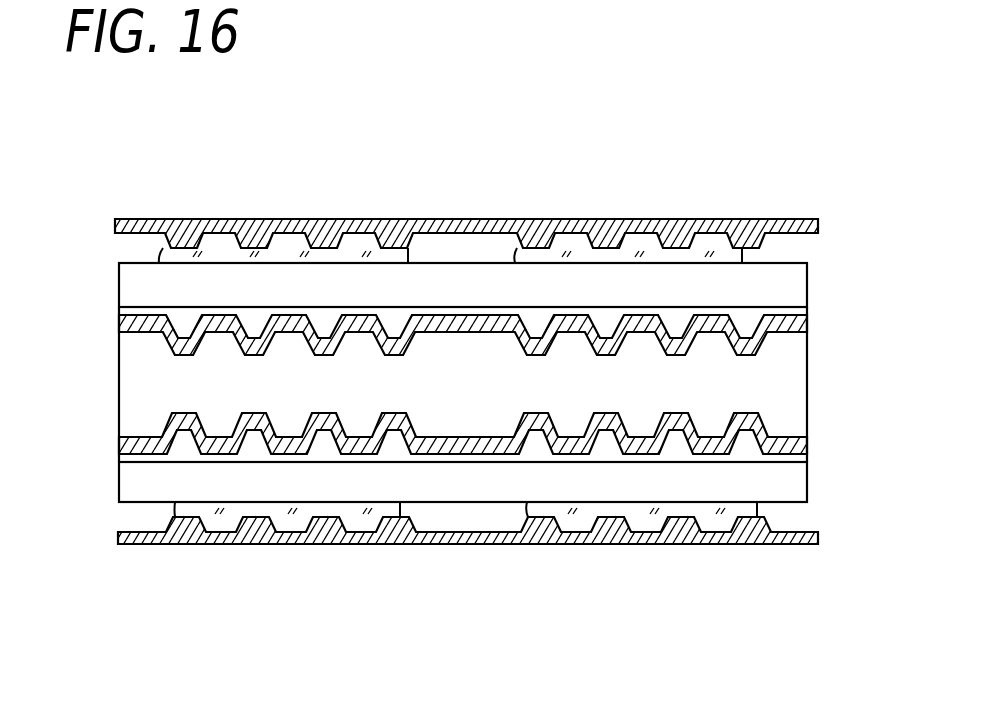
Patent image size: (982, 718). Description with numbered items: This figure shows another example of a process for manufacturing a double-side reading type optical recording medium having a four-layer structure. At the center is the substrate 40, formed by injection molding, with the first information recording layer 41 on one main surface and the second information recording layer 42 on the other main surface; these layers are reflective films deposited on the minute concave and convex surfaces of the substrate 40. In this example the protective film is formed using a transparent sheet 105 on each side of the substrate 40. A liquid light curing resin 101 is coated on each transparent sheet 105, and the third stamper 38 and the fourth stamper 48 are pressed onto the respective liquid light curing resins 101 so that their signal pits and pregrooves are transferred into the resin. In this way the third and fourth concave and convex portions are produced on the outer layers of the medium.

The third stamper 38 is at (457, 544).
The substrate 40 is at (790, 377).
The first information recording layer 41 is at (177, 418).
The second information recording layer 42 is at (177, 347).
The fourth stamper 48 is at (463, 219).
The liquid light curing resin 101 is at (569, 248).
The transparent sheet 105 is at (793, 283).